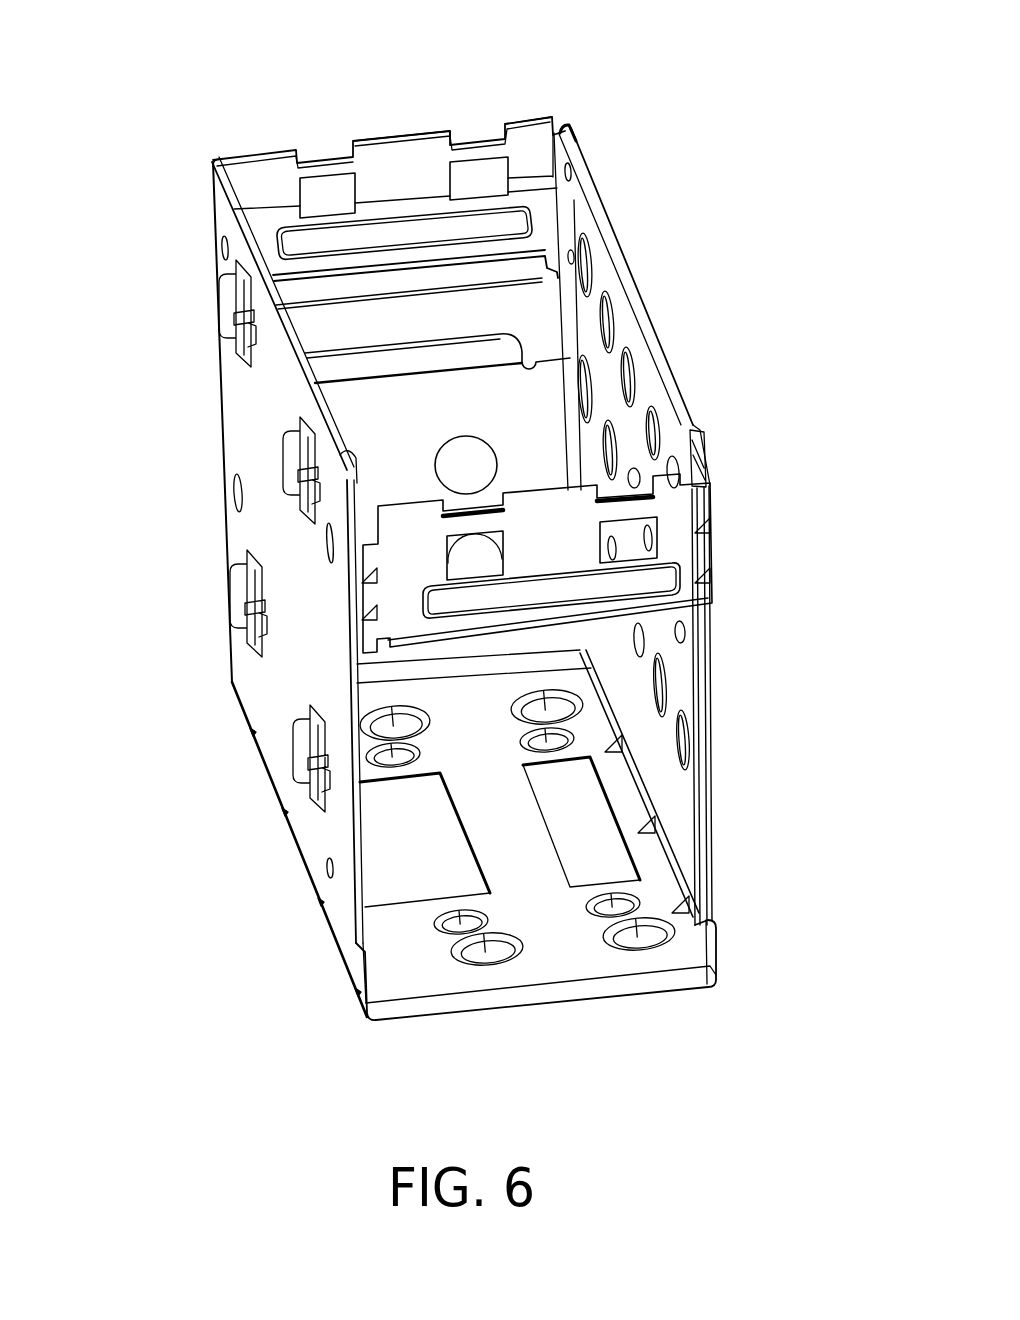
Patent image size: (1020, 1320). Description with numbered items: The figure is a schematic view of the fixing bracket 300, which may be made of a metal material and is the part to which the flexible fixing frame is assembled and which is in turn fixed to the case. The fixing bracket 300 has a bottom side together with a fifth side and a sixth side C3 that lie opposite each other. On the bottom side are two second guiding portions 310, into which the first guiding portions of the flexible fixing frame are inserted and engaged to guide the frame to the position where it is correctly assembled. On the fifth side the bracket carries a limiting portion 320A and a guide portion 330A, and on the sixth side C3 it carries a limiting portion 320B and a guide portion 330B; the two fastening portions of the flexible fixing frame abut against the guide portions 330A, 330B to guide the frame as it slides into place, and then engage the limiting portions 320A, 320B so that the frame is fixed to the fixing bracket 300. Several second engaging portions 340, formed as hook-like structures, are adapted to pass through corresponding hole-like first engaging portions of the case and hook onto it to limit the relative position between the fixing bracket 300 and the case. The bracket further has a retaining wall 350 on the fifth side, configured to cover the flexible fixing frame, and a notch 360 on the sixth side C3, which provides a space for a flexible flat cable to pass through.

The fixing bracket 300 is at (868, 1083).
The second guiding portion 310 is at (633, 907).
The limiting portion 320A is at (298, 192).
The limiting portion 320B is at (447, 537).
The guide portion 330A is at (299, 148).
The guide portion 330B is at (447, 505).
The second engaging portion 340 is at (224, 295).
The retaining wall 350 is at (530, 397).
The notch 360 is at (565, 964).
The sixth side C3 is at (393, 768).